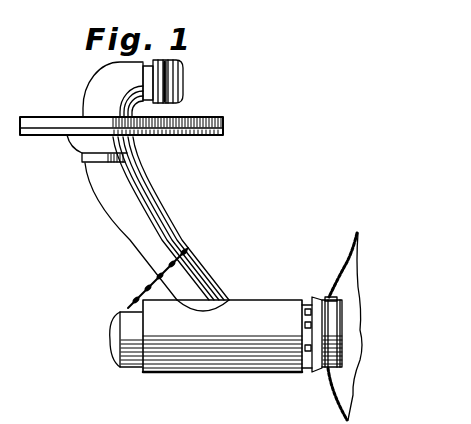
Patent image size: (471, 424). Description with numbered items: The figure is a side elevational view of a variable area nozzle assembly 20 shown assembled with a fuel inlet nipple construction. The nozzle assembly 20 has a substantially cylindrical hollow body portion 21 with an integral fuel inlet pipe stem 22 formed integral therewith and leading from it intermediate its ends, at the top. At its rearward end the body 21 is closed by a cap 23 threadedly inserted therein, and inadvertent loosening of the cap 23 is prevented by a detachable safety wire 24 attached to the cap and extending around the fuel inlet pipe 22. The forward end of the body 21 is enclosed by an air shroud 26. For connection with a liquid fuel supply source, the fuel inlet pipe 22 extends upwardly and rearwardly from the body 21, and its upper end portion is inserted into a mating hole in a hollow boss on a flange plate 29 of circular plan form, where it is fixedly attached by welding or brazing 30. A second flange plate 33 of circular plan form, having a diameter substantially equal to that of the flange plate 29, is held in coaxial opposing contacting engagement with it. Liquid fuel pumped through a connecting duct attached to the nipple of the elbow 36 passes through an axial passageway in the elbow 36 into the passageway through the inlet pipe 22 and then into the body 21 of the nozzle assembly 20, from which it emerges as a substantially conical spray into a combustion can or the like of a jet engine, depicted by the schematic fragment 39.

The variable area nozzle assembly 20 is at (233, 331).
The body portion 21 is at (242, 374).
The fuel inlet pipe stem 22 is at (200, 263).
The cap 23 is at (120, 350).
The safety wire 24 is at (147, 290).
The air shroud 26 is at (342, 300).
The flange plate 29 is at (48, 137).
The welding or brazing 30 is at (85, 155).
The second flange plate 33 is at (225, 119).
The elbow 36 is at (93, 78).
The schematic fragment 39 is at (340, 408).